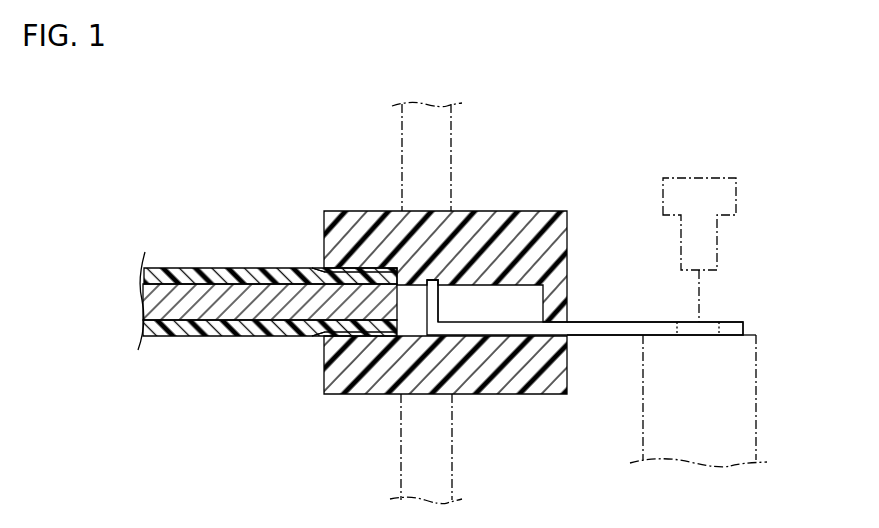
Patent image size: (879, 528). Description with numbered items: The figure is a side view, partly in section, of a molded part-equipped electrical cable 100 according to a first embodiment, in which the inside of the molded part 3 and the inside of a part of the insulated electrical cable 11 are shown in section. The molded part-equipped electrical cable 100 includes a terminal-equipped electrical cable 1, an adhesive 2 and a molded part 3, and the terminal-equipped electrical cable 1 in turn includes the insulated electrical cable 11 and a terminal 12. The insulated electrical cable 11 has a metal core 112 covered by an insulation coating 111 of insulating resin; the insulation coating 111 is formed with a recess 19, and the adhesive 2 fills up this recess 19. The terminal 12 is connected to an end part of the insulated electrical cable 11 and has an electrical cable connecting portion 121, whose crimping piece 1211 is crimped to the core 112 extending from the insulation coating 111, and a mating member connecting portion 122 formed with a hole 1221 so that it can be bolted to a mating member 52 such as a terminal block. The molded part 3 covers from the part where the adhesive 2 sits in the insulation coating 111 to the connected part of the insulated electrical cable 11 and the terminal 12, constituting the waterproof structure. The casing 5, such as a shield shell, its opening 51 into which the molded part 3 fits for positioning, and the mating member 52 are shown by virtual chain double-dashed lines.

The molded part-equipped electrical cable 100 is at (690, 83).
The terminal-equipped electrical cable 1 is at (243, 293).
The insulated electrical cable 11 is at (267, 293).
The insulation coating 111 is at (180, 331).
The core 112 is at (246, 325).
The adhesive 2 is at (312, 270).
The recess 19 is at (323, 267).
The molded part 3 is at (330, 396).
The casing 5 is at (453, 157).
The opening 51 is at (392, 396).
The terminal 12 is at (606, 343).
The electrical cable connecting portion 121 is at (525, 330).
The crimping piece 1211 is at (436, 302).
The mating member connecting portion 122 is at (610, 322).
The hole 1221 is at (690, 320).
The mating member 52 is at (758, 398).